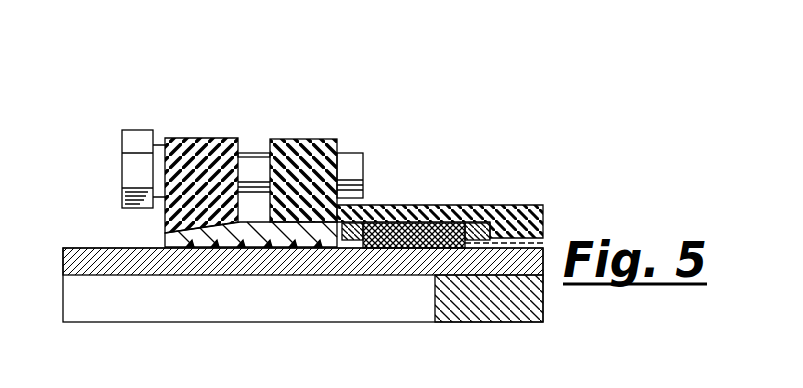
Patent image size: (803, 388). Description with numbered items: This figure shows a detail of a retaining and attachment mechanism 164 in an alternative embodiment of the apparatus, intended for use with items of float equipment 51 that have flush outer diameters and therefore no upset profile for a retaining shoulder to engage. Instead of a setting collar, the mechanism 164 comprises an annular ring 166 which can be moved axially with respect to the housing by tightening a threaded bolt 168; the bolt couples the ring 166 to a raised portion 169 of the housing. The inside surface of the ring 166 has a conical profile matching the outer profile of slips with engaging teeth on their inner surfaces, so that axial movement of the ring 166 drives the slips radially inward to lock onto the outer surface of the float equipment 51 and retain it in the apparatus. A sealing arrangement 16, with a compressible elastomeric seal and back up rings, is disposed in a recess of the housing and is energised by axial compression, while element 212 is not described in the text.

The sealing arrangement 16 is at (398, 250).
The float equipment 51 is at (192, 260).
The retaining and attachment mechanism 164 is at (100, 123).
The annular ring 166 is at (205, 138).
The threaded bolt 168 is at (259, 172).
The raised portion of the housing 169 is at (330, 139).
The cover plate 212 is at (512, 203).